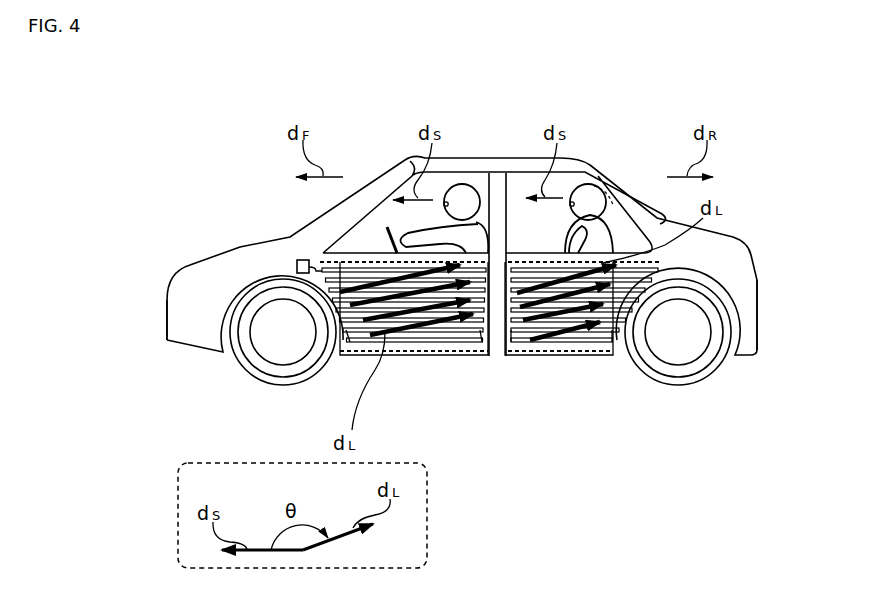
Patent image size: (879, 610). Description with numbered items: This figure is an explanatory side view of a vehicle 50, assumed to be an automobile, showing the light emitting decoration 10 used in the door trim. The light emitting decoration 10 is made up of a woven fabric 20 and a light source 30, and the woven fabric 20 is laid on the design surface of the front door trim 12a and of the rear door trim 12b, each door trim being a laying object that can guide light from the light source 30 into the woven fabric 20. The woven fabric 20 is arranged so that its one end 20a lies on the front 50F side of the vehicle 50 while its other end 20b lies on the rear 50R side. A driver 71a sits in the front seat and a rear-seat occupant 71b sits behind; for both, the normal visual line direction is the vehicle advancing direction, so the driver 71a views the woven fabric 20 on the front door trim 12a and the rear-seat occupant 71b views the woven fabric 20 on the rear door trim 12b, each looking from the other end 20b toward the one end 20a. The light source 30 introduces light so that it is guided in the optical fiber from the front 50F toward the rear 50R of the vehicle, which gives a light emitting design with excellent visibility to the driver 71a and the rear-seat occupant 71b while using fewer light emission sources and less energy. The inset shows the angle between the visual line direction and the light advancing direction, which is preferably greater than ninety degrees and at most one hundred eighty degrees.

The light emitting decoration 10 is at (210, 90).
The front door trim 12a is at (453, 355).
The rear door trim 12b is at (530, 355).
The woven fabric 20 is at (430, 350).
The one end of the woven fabric 20a is at (347, 332).
The other end of the woven fabric 20b is at (487, 358).
The light source 30 is at (298, 260).
The vehicle 50 is at (240, 250).
The front of the vehicle 50F is at (167, 307).
The rear of the vehicle 50R is at (760, 318).
The driver 71a is at (461, 184).
The rear-seat occupant 71b is at (605, 192).